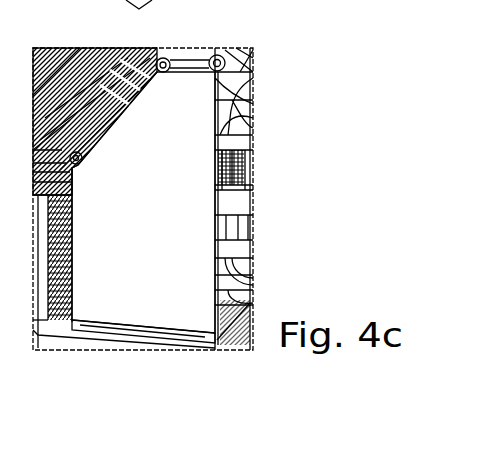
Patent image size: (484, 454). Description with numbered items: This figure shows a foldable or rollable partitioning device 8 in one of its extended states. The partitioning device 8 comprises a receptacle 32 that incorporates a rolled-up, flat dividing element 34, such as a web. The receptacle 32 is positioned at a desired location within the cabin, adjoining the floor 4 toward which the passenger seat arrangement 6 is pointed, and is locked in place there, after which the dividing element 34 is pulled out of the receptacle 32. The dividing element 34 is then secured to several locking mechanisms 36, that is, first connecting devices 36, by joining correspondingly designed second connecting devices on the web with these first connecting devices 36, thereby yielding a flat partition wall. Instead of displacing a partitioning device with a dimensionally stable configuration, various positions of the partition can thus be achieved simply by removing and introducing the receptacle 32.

The floor 4 is at (237, 340).
The passenger seat arrangement 6 is at (250, 188).
The partitioning device 8 is at (87, 347).
The receptacle 32 is at (120, 340).
The dividing element 34 is at (128, 247).
The locking mechanism 36 is at (165, 57).